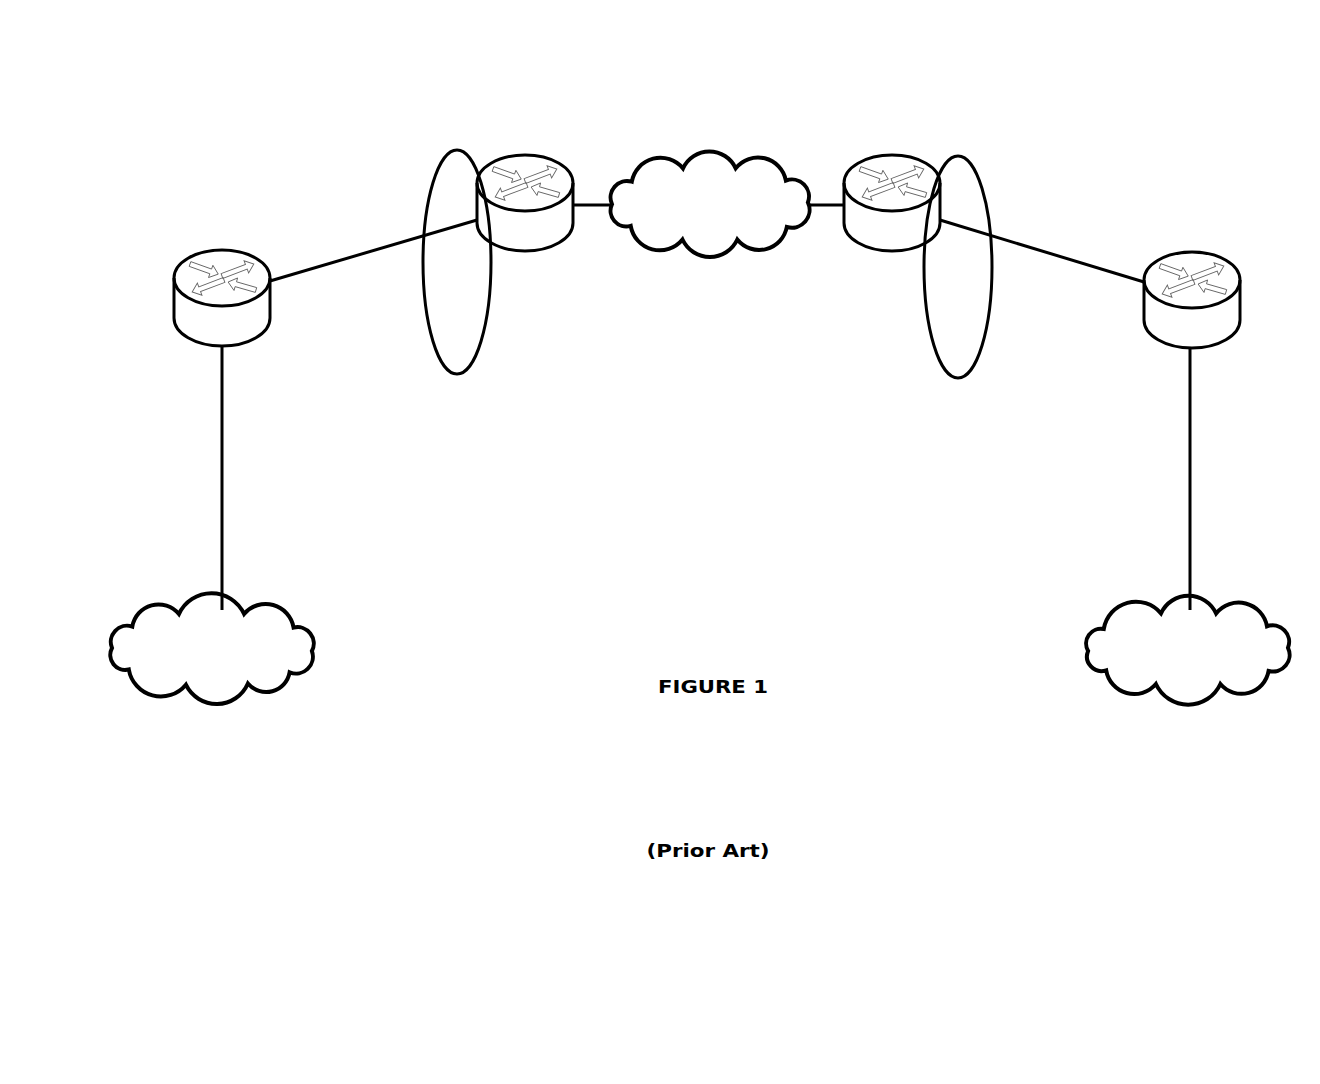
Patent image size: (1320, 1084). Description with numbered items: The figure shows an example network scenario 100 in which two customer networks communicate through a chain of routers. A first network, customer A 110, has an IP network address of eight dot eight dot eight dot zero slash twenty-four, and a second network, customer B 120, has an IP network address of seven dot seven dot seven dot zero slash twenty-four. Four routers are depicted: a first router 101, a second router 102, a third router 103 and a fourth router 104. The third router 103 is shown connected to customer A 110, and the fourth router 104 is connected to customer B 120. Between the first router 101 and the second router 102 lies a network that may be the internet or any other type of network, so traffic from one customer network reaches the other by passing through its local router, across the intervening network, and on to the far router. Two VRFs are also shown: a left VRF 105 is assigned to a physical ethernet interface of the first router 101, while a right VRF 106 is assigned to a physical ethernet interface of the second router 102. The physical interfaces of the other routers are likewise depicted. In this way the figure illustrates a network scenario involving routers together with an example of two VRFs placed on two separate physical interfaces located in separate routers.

The network scenario 100 is at (692, 551).
The router R1 101 is at (525, 253).
The router R2 102 is at (888, 253).
The router R3 103 is at (173, 272).
The router R4 104 is at (1232, 330).
The L-VRF 105 is at (457, 298).
The R-VRF 106 is at (958, 301).
The customer A network 110 is at (211, 682).
The customer B network 120 is at (1187, 683).